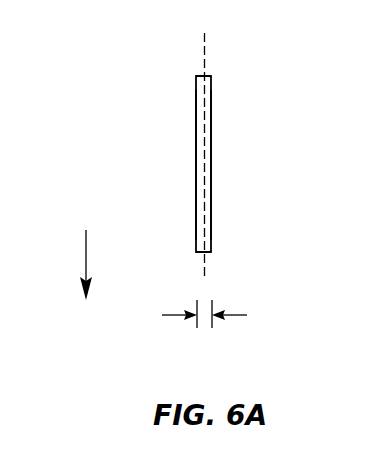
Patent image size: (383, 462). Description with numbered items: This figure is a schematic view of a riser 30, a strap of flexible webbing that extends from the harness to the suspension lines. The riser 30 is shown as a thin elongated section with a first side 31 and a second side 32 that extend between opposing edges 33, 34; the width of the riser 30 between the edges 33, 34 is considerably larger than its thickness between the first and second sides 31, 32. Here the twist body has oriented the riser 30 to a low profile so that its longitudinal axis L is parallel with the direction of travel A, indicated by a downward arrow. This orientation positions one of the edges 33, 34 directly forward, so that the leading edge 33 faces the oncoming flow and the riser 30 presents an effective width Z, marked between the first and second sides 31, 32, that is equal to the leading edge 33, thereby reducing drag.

The riser 30 is at (153, 105).
The first side 31 is at (196, 166).
The second side 32 is at (212, 160).
The leading edge 33 is at (211, 252).
The opposing edge 34 is at (208, 73).
The longitudinal axis L is at (204, 57).
The direction of travel A is at (85, 270).
The effective width Z is at (214, 315).